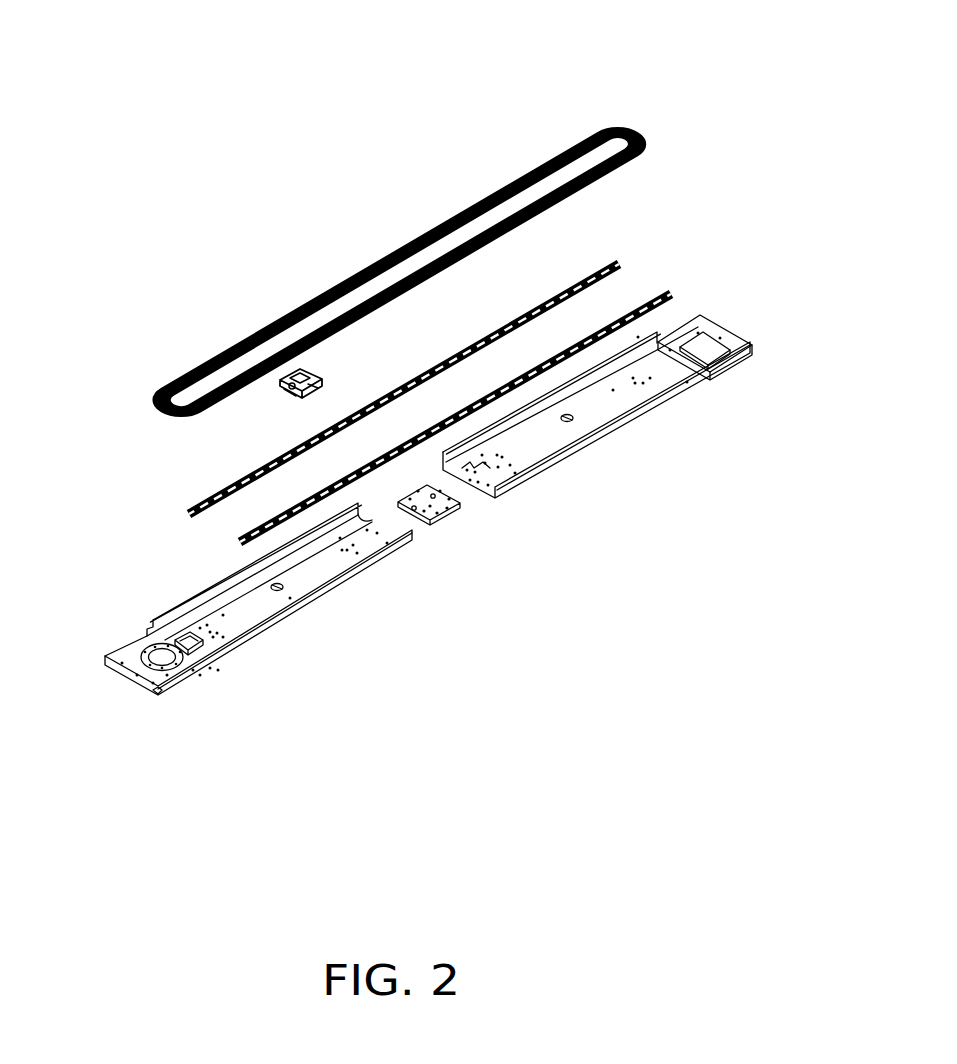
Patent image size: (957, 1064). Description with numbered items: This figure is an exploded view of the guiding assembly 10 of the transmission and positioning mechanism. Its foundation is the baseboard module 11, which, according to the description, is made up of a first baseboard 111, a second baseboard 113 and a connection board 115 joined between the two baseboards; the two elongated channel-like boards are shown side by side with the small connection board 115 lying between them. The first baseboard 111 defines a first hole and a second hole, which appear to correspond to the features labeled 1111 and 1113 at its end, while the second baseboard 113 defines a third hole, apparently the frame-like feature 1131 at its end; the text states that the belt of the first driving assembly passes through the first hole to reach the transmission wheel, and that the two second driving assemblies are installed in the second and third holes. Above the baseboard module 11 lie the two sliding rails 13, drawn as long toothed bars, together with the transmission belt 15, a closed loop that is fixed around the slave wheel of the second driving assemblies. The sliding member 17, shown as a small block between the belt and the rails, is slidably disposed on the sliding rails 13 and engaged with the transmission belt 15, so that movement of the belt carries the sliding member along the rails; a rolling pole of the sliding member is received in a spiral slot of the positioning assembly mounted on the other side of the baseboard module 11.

The guiding assembly 10 is at (378, 52).
The baseboard module 11 is at (585, 513).
The first baseboard 111 is at (373, 563).
The stop block 1111 is at (181, 642).
The mounting hole 1113 is at (162, 657).
The second baseboard 113 is at (546, 462).
The mounting frame 1131 is at (708, 346).
The connecting plate 115 is at (440, 520).
The sliding rails 13 is at (619, 264).
The transmission belt 15 is at (647, 131).
The sliding members 17 is at (312, 376).